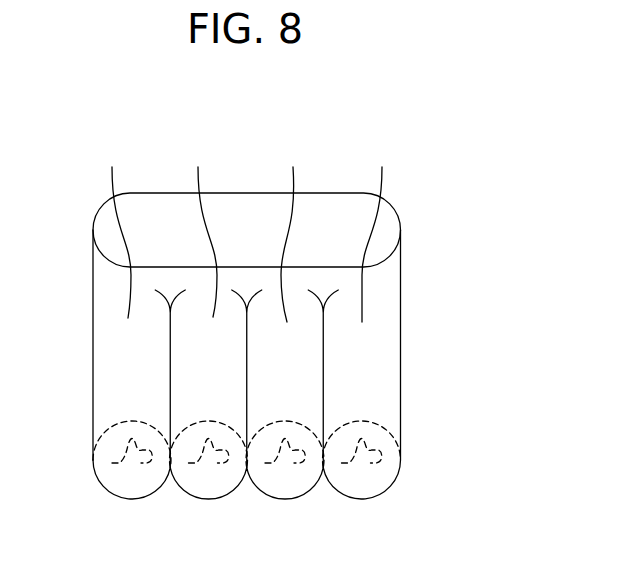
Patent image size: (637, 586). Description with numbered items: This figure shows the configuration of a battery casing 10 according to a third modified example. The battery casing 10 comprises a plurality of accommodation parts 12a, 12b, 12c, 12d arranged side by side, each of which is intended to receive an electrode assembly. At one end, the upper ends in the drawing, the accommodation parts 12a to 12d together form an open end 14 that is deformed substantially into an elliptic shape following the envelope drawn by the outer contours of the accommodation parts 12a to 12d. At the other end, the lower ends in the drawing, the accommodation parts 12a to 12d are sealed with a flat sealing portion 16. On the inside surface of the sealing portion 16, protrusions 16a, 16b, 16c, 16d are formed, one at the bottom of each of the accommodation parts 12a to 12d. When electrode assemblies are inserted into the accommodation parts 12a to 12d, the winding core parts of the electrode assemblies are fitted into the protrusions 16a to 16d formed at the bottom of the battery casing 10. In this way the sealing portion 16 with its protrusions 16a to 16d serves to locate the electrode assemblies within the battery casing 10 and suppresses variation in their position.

The battery casing 10 is at (461, 167).
The accommodation part 12a is at (112, 223).
The accommodation part 12b is at (203, 222).
The accommodation part 12c is at (293, 225).
The accommodation part 12d is at (383, 225).
The open end 14 is at (237, 210).
The sealing portion 16 is at (123, 477).
The protrusion 16a is at (160, 450).
The protrusion 16b is at (236, 450).
The protrusion 16c is at (313, 450).
The protrusion 16d is at (390, 450).